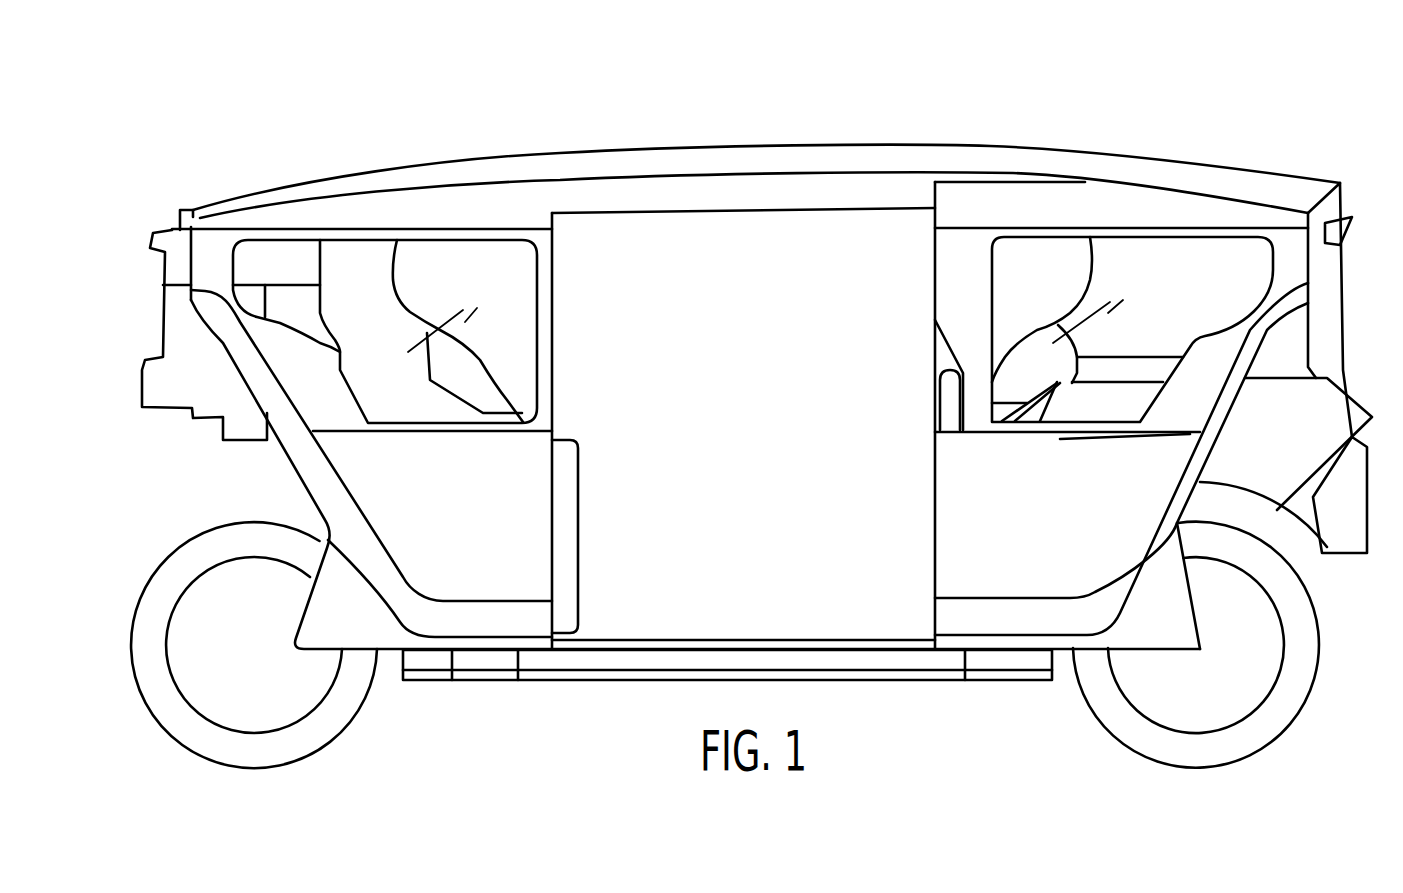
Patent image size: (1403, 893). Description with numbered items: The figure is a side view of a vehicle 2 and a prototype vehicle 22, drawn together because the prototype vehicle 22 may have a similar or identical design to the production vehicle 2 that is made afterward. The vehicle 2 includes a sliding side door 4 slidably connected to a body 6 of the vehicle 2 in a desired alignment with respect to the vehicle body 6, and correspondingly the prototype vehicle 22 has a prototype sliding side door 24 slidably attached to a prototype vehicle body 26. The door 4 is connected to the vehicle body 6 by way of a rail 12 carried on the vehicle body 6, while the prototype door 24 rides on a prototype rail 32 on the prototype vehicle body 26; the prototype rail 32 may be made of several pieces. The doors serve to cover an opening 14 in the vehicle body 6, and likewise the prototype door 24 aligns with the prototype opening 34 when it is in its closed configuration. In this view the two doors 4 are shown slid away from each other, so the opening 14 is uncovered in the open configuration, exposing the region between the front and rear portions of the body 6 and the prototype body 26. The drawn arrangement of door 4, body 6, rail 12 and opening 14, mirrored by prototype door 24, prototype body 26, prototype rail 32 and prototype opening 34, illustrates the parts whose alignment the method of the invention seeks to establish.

The vehicle 2 is at (751, 408).
The prototype vehicle 22 is at (1210, 90).
The sliding side door 4 is at (766, 162).
The prototype sliding side door 24 is at (388, 196).
The vehicle body 6 is at (754, 146).
The prototype vehicle body 26 is at (1008, 157).
The rail 12 is at (727, 400).
The prototype rail 32 is at (745, 182).
The opening 14 is at (743, 363).
The prototype opening 34 is at (696, 256).